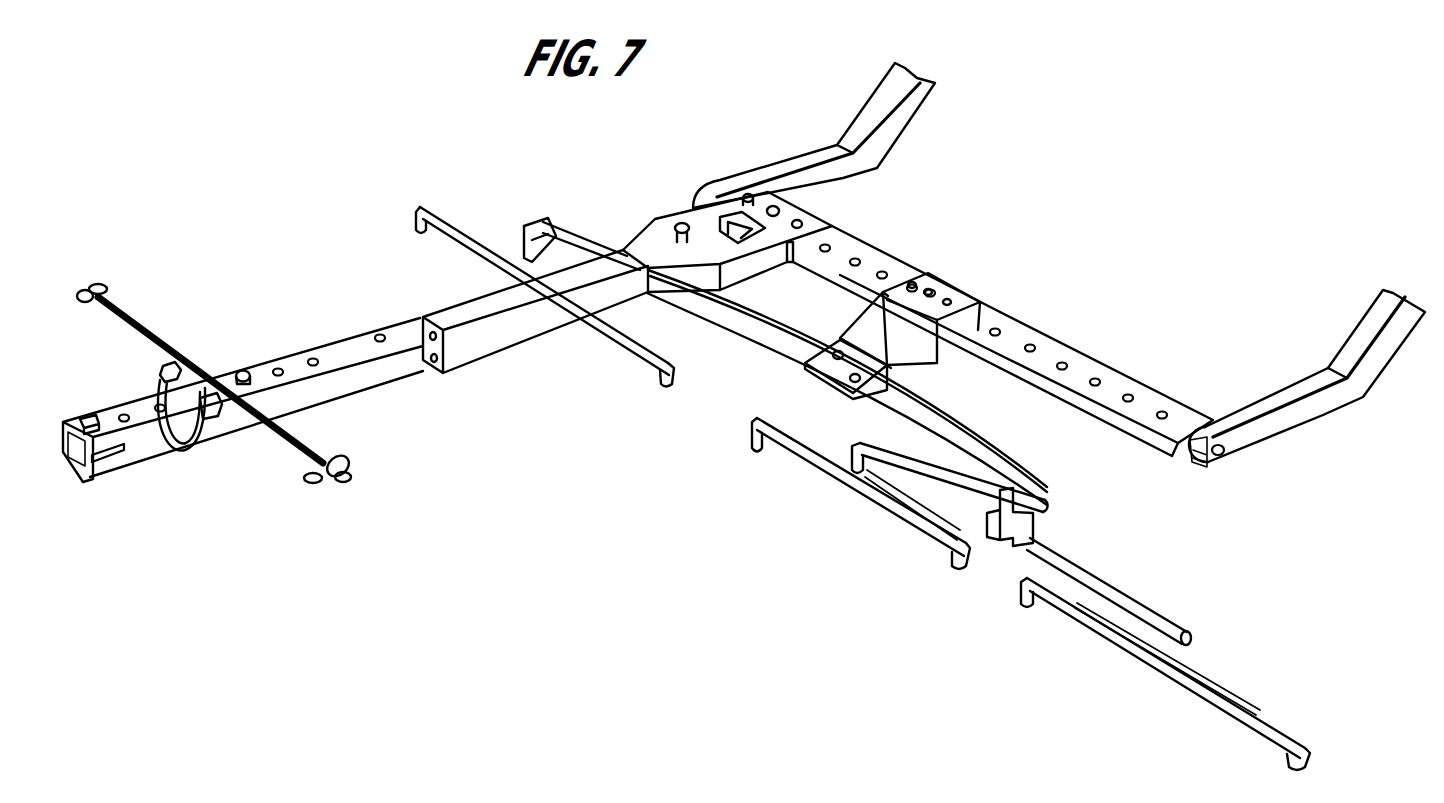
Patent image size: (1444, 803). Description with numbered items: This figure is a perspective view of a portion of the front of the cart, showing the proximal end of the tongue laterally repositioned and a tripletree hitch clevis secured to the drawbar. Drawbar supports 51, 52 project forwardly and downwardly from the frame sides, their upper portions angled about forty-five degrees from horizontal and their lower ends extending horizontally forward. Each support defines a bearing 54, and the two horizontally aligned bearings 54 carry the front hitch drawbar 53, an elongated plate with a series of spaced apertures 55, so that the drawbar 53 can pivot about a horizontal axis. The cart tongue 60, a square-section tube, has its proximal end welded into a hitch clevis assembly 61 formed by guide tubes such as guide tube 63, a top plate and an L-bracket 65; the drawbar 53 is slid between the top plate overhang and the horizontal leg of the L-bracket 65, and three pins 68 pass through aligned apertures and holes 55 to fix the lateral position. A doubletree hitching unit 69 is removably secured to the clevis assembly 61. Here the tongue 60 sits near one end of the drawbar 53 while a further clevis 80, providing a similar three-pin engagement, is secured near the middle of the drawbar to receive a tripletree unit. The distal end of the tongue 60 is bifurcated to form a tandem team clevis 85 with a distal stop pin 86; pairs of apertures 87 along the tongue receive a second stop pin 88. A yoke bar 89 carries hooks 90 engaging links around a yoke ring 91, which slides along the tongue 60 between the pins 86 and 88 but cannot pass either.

The drawbar support 51 is at (803, 160).
The drawbar support 52 is at (1280, 397).
The front hitch drawbar 53 is at (1160, 393).
The bearing 54 is at (1221, 458).
The apertures 55 is at (1032, 345).
The cart tongue 60 is at (472, 342).
The hitch clevis assembly 61 is at (668, 186).
The guide tube 63 is at (747, 268).
The L-bracket 65 is at (797, 266).
The pins 68 is at (780, 211).
The doubletree hitching unit 69 is at (1113, 552).
The clevis 80 is at (910, 362).
The tandem team clevis 85 is at (108, 458).
The distal stop pin 86 is at (86, 420).
The apertures 87 is at (124, 414).
The second stop pin 88 is at (244, 368).
The yoke bar 89 is at (307, 447).
The hooks 90 is at (158, 362).
The yoke ring 91 is at (197, 455).